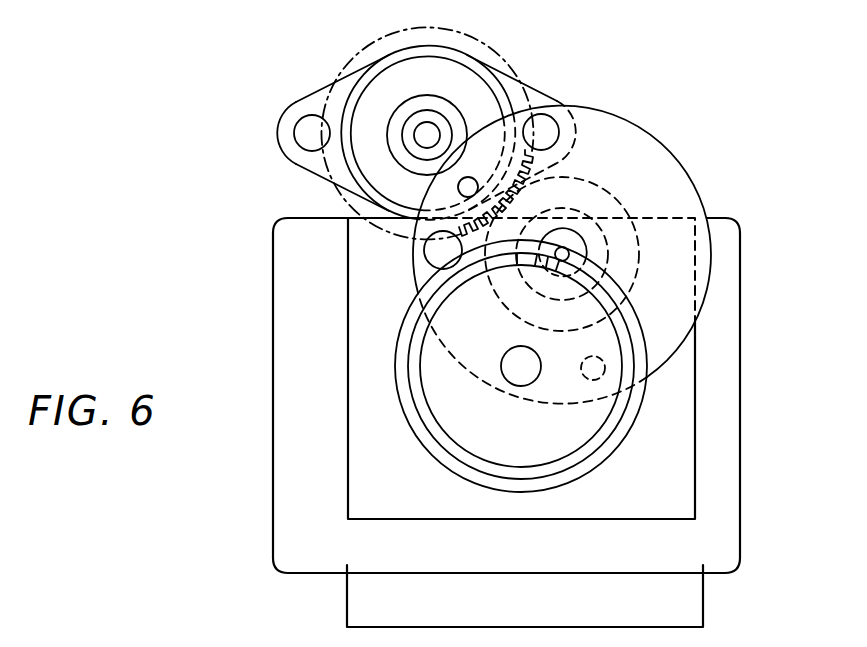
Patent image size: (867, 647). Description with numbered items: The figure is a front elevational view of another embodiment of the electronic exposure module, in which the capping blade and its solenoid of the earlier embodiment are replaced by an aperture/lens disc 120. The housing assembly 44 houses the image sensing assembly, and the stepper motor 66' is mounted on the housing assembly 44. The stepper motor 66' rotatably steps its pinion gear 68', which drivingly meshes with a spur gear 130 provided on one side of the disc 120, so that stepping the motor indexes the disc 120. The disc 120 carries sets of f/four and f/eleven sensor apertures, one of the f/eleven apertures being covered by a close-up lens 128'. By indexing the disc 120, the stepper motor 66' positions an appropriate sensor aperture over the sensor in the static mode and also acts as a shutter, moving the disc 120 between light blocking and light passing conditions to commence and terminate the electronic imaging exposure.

The housing assembly 44 is at (658, 560).
The aperture/lens disc 120 is at (700, 277).
The spur gear 130 is at (632, 209).
The stepper motor 66' is at (419, 119).
The pinion gear 68' is at (465, 133).
The close-up lens 128' is at (605, 112).